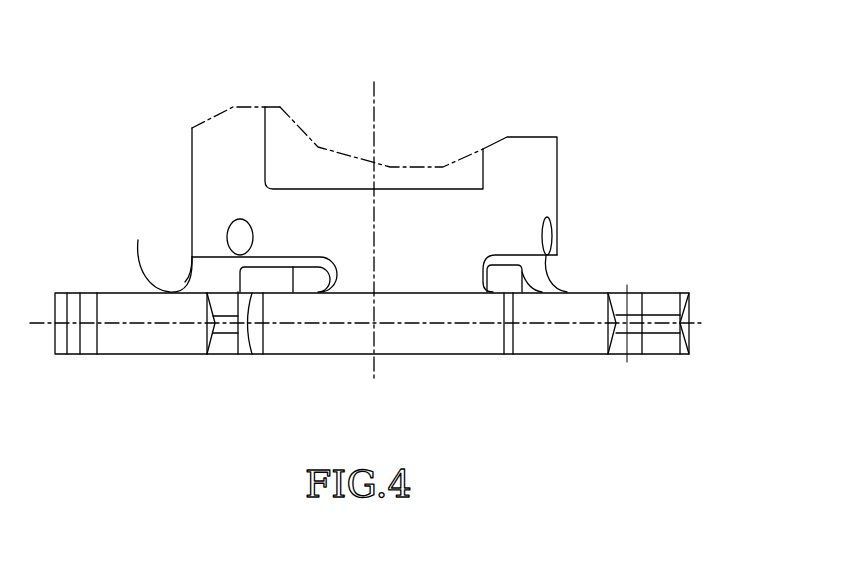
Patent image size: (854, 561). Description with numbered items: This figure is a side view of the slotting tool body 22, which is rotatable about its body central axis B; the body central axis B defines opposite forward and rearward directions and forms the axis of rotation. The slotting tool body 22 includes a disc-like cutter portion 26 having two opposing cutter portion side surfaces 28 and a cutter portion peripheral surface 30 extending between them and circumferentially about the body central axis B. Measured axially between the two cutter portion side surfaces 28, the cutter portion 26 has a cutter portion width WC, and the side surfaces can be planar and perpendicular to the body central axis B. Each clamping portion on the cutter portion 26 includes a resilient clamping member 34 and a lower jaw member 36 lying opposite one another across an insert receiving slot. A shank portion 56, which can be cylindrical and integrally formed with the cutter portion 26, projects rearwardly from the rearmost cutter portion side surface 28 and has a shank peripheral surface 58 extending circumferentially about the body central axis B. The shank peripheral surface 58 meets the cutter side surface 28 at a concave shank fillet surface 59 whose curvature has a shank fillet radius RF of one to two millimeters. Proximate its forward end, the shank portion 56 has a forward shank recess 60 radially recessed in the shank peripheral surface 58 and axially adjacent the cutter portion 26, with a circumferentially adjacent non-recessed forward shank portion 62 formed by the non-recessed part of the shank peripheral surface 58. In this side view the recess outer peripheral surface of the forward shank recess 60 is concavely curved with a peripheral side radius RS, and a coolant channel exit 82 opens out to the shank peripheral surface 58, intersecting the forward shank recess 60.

The slotting tool body 22 is at (651, 111).
The cutter portion 26 is at (595, 370).
The cutter portion side surfaces 28 is at (647, 292).
The cutter portion peripheral surface 30 is at (447, 345).
The resilient clamping member 34 is at (560, 345).
The lower jaw member 36 is at (680, 323).
The shank portion 56 is at (168, 152).
The shank peripheral surface 58 is at (528, 153).
The shank fillet surface 59 is at (138, 240).
The forward shank recess 60 is at (217, 262).
The non-recessed forward shank portion 62 is at (451, 268).
The coolant channel exit 82 is at (253, 232).
The body central axis B is at (375, 100).
The cutter portion width WC is at (110, 390).
The shank fillet radius RF is at (183, 240).
The peripheral side radius RS is at (313, 274).